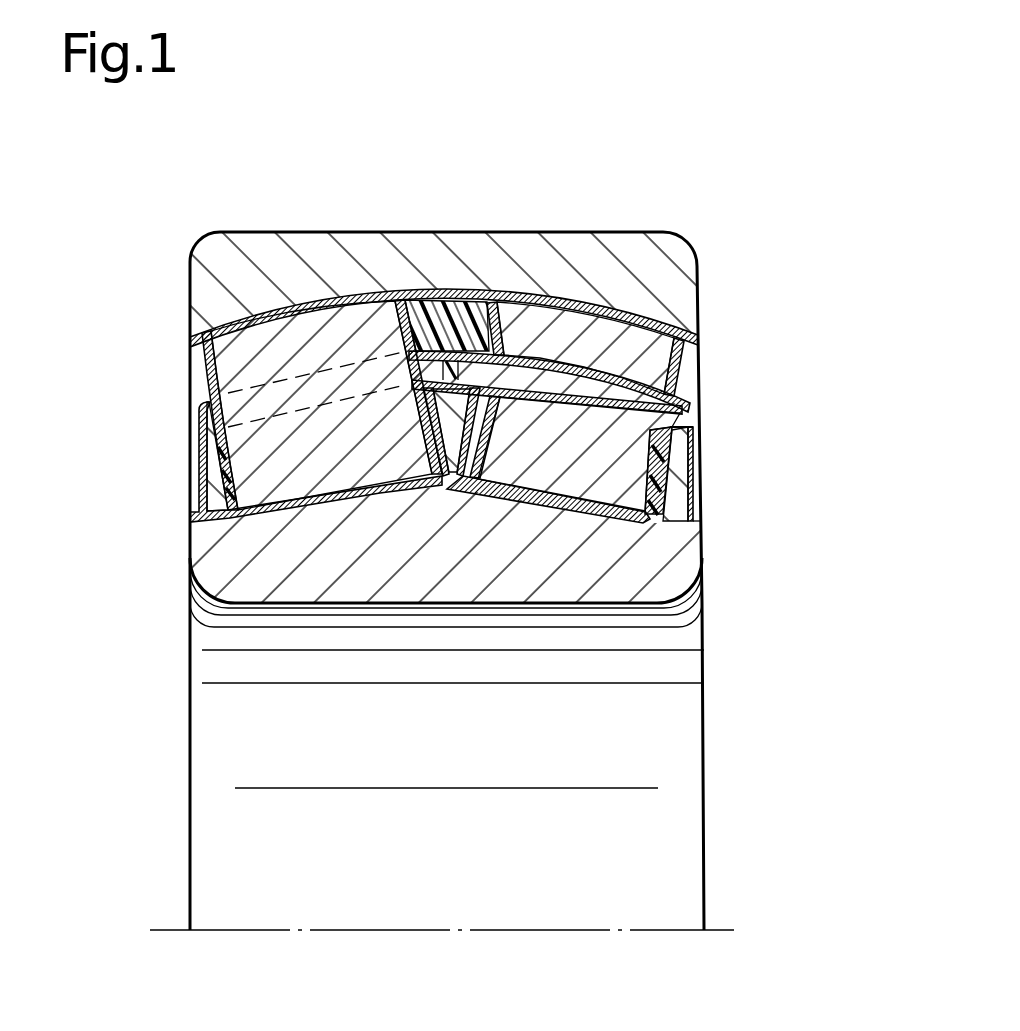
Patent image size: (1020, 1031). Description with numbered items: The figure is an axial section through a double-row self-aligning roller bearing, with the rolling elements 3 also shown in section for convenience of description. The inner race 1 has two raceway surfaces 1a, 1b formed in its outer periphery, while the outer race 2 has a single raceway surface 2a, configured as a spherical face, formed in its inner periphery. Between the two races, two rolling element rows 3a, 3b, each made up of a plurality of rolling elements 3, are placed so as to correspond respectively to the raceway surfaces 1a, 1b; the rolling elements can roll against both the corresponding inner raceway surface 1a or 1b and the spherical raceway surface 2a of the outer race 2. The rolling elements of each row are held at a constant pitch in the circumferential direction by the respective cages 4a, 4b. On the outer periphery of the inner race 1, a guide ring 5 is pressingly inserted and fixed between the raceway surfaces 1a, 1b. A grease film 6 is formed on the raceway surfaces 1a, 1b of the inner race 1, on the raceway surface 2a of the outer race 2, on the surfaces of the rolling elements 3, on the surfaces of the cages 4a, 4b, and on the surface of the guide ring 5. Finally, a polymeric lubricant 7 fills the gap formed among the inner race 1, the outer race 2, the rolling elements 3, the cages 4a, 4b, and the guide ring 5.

The inner race 1 is at (613, 582).
The raceway surface 1a is at (317, 500).
The raceway surface 1b is at (577, 497).
The outer race 2 is at (640, 248).
The raceway surface 2a is at (307, 316).
The rolling elements 3 is at (204, 350).
The rolling element row 3a is at (199, 386).
The rolling element row 3b is at (690, 378).
The cage 4a is at (205, 502).
The cage 4b is at (700, 486).
The guide ring 5 is at (453, 480).
The grease film 6 is at (264, 312).
The polymeric lubricant 7 is at (447, 312).